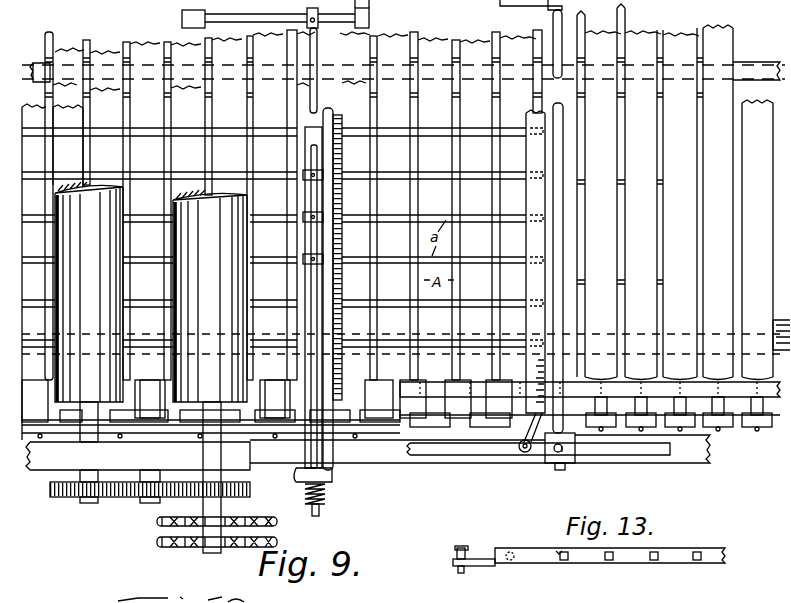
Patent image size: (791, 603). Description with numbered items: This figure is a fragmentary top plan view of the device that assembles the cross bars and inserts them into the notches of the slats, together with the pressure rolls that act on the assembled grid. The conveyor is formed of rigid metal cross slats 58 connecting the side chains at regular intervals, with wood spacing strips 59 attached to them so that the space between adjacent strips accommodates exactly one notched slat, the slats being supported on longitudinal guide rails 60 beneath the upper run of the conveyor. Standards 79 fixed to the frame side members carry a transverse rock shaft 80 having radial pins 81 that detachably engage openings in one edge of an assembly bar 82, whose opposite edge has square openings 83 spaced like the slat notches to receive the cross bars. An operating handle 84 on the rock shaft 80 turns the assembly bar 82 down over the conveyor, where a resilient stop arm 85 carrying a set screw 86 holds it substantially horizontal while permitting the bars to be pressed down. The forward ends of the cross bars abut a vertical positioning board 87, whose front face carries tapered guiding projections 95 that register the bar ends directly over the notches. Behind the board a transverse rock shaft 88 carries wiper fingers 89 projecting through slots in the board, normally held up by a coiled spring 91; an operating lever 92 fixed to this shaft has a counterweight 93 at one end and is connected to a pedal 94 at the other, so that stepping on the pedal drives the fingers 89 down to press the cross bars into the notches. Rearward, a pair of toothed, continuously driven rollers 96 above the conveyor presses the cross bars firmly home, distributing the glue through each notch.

In FIG. 9, the cross slats 58 is at (722, 405).
In FIG. 9, the spacing strips 59 is at (679, 31).
In FIG. 9, the guide rails 60 is at (778, 72).
In FIG. 9, the standards 79 is at (575, 460).
In FIG. 9, the rock shaft 80 is at (558, 277).
In FIG. 9, the pins 81 is at (536, 191).
In FIG. 9, the assembly bar 82 is at (531, 146).
In FIG. 13, the assembly bar 82 is at (628, 565).
In FIG. 13, the square openings 83 is at (694, 562).
In FIG. 9, the operating handle 84 is at (531, 39).
In FIG. 9, the stop arm 85 is at (521, 448).
In FIG. 13, the stop arm 85 is at (465, 568).
In FIG. 9, the set screw 86 is at (525, 453).
In FIG. 13, the set screw 86 is at (466, 554).
In FIG. 9, the positioning board 87 is at (330, 478).
In FIG. 9, the rock shaft 88 is at (309, 289).
In FIG. 9, the wiper fingers 89 is at (305, 212).
In FIG. 9, the coiled spring 91 is at (322, 511).
In FIG. 9, the operating lever 92 is at (326, 14).
In FIG. 9, the counterweight 93 is at (182, 17).
In FIG. 9, the pedal 94 is at (369, 20).
In FIG. 9, the cross bar guiding projections 95 is at (344, 315).
In FIG. 9, the rollers 96 is at (107, 250).